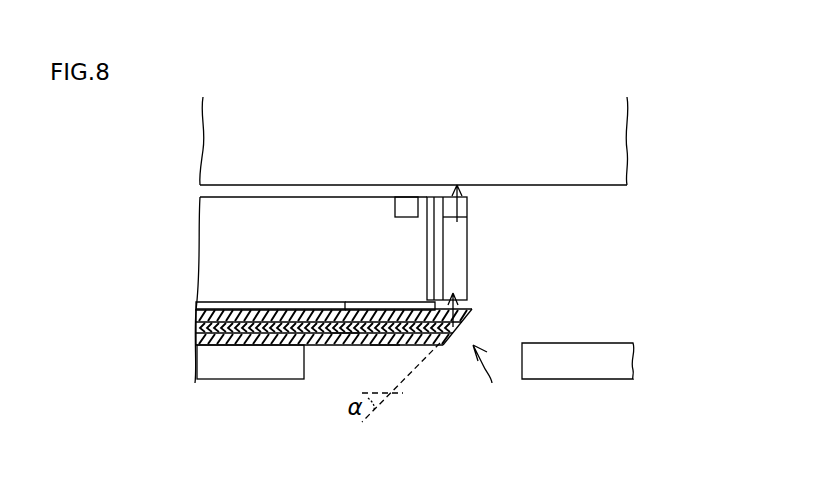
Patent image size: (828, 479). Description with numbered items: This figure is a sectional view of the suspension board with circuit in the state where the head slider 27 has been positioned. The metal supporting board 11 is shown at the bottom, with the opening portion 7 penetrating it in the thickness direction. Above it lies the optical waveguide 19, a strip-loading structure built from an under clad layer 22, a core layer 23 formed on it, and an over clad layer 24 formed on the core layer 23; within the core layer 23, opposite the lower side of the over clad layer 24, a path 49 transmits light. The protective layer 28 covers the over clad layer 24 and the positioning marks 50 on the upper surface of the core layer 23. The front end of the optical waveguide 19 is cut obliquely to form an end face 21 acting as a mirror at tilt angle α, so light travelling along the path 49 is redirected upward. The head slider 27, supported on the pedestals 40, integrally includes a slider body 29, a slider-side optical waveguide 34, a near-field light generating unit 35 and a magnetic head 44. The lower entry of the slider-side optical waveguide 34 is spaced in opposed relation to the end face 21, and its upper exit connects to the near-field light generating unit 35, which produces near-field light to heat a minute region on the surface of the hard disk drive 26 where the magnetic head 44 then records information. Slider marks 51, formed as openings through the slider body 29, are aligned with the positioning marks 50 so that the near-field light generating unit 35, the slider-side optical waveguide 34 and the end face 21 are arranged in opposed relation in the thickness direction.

The opening portion 7 is at (305, 378).
The metal supporting board 11 is at (633, 363).
The optical waveguide 19 is at (492, 378).
The end face 21 is at (453, 345).
The under clad layer 22 is at (193, 344).
The core layer 23 is at (193, 331).
The over clad layer 24 is at (193, 321).
The hard disk drive 26 is at (575, 186).
The head slider 27 is at (193, 233).
The protective layer 28 is at (473, 311).
The slider body 29 is at (346, 333).
The slider-side optical waveguide 34 is at (468, 259).
The near-field light generating unit 35 is at (468, 206).
The pedestal 40 is at (255, 302).
The magnetic head 44 is at (404, 197).
The path 49 is at (385, 338).
The positioning mark 50 is at (420, 311).
The slider mark 51 is at (432, 205).